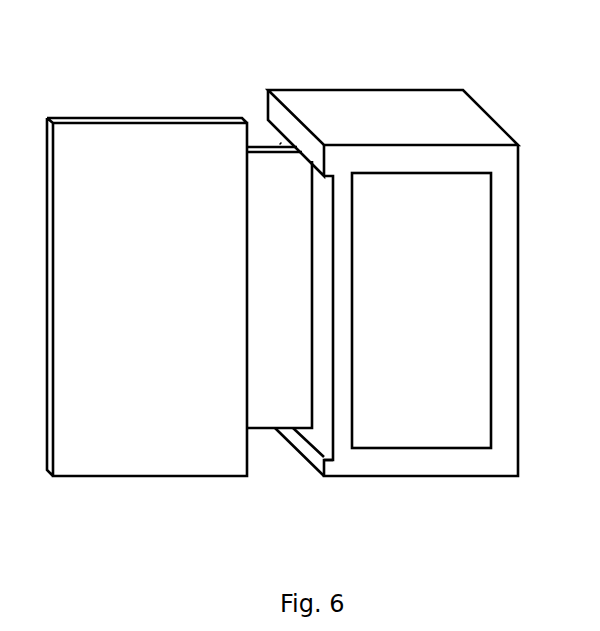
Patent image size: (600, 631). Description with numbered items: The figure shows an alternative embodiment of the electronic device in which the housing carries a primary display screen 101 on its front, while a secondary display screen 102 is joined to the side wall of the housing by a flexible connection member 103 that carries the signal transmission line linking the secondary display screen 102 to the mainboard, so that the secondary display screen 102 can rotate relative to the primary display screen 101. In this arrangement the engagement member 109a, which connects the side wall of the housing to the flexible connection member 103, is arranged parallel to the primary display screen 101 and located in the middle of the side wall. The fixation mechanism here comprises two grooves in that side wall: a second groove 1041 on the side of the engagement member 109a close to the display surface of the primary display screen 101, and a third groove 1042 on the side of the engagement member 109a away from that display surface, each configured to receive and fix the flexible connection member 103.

The primary display screen 101 is at (462, 200).
The secondary display screen 102 is at (60, 145).
The flexible connection member 103 is at (258, 280).
The second groove 1041 is at (324, 425).
The third groove 1042 is at (280, 143).
The engagement member 109a is at (312, 405).